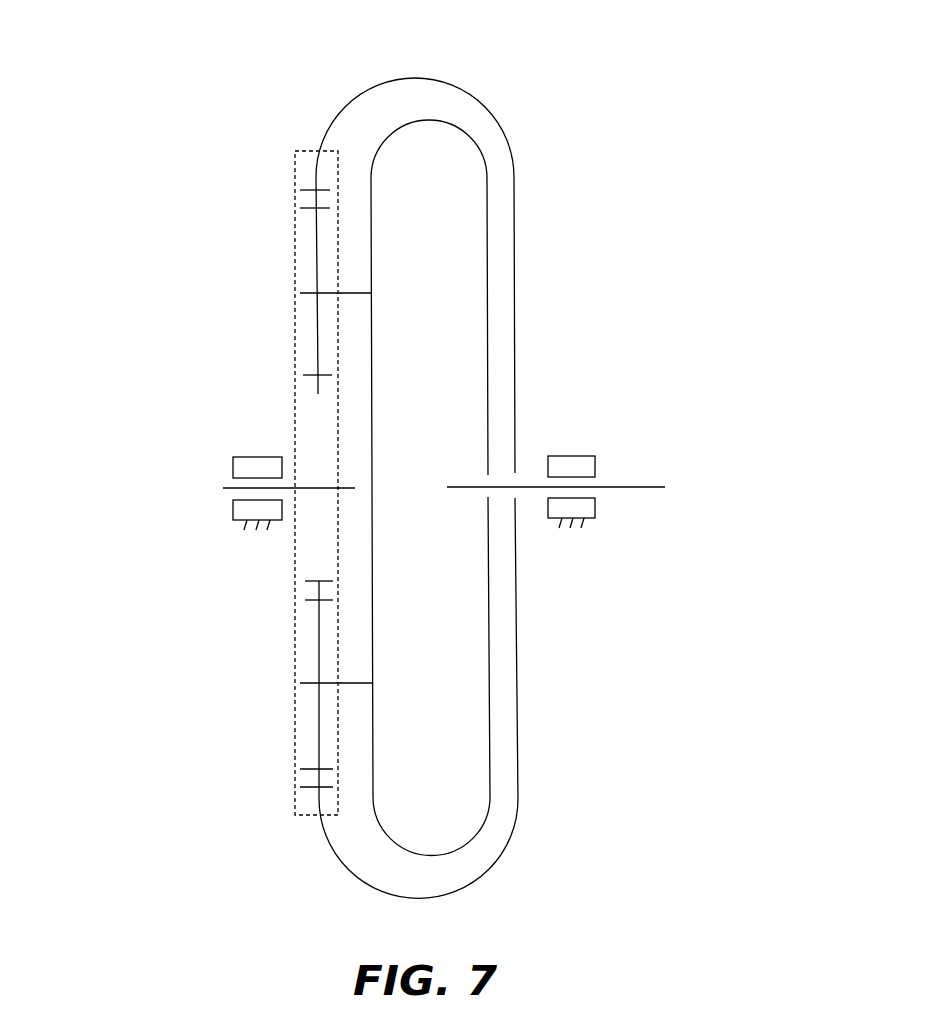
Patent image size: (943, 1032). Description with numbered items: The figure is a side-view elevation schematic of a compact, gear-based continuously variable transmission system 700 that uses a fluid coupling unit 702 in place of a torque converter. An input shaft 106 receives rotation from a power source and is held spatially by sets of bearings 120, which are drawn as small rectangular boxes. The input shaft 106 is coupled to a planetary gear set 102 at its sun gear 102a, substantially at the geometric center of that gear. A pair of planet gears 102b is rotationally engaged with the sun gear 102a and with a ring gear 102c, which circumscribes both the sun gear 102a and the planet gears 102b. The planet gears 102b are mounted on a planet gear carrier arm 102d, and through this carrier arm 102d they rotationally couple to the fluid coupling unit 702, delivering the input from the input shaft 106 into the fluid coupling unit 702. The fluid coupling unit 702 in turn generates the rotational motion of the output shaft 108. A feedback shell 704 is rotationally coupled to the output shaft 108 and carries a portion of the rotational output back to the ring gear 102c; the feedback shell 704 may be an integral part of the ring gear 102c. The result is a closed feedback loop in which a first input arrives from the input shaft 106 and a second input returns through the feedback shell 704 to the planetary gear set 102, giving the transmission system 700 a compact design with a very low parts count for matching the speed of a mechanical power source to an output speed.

The continuously variable transmission system 700 is at (575, 75).
The fluid coupling unit 702 is at (371, 262).
The feedback shell 704 is at (514, 230).
The planetary gear set 102 is at (295, 628).
The sun gear 102a is at (332, 394).
The planet gears 102b is at (300, 208).
The ring gear 102c is at (300, 190).
The planet gear carrier arm 102d is at (300, 293).
The input shaft 106 is at (225, 489).
The output shaft 108 is at (640, 490).
The bearings 120 is at (573, 452).